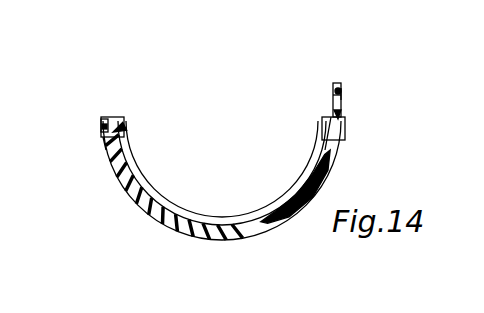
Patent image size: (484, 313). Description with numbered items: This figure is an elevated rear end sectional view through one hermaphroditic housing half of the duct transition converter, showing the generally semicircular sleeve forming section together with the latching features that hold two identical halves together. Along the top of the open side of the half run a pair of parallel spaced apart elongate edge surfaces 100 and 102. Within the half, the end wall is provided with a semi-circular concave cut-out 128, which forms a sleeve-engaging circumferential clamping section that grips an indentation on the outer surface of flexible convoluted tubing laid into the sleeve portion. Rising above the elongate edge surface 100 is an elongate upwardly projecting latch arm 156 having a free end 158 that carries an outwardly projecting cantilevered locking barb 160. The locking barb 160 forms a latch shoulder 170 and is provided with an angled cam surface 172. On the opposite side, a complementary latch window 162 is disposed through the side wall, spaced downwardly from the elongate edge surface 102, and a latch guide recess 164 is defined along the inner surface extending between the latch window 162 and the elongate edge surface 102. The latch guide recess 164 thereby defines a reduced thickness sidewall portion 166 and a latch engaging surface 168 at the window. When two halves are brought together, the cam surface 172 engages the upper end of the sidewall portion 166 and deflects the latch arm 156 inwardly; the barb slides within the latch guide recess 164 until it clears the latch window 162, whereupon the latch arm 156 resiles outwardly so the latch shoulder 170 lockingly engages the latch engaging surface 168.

The elongate edge surface 100 is at (325, 117).
The elongate edge surface 102 is at (107, 118).
The cut-out 128 is at (168, 203).
The latch arm 156 is at (345, 129).
The free end 158 is at (337, 83).
The locking barb 160 is at (341, 91).
The latch window 162 is at (103, 147).
The latch guide recess 164 is at (124, 126).
The reduced thickness sidewall portion 166 is at (101, 126).
The latch engaging surface 168 is at (103, 137).
The latch shoulder 170 is at (343, 93).
The angled cam surface 172 is at (340, 91).